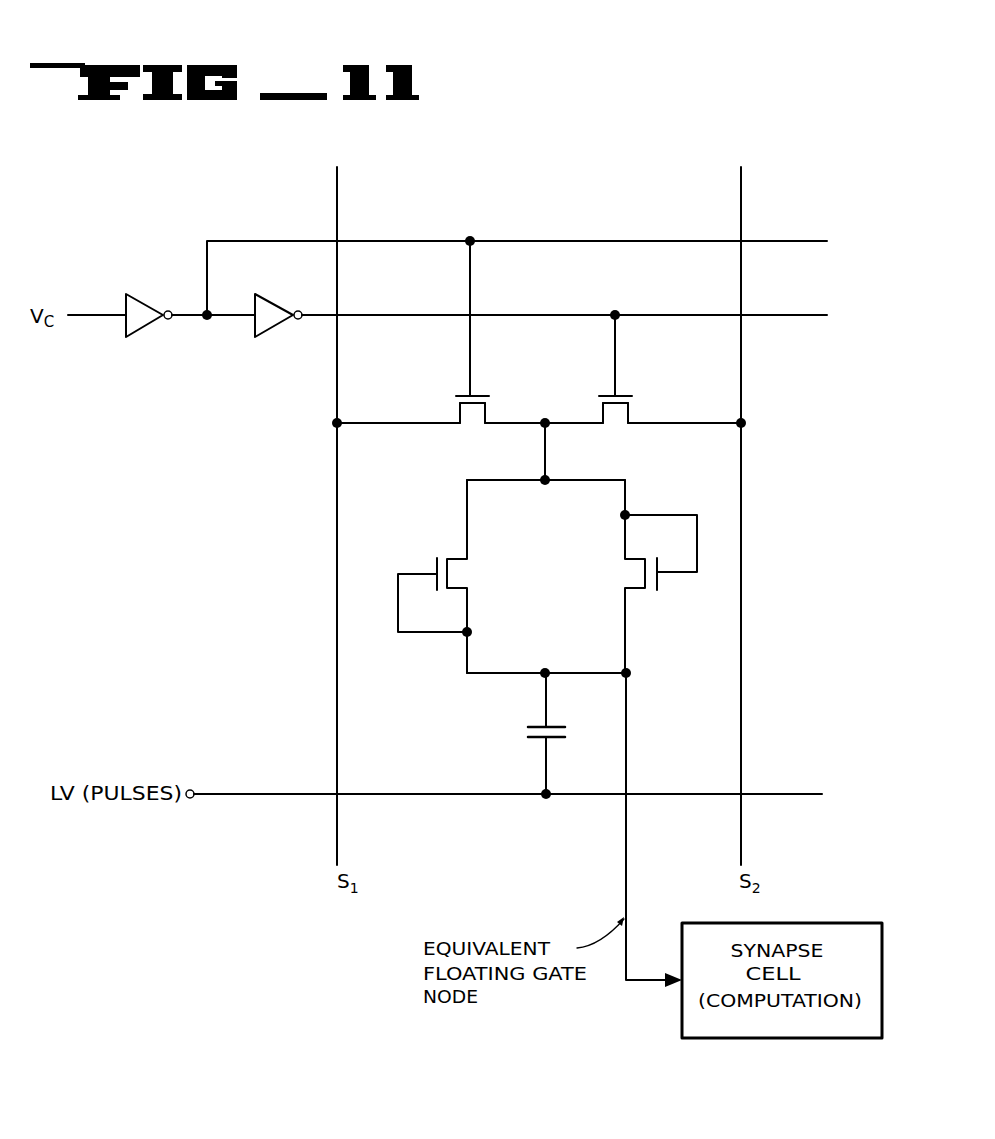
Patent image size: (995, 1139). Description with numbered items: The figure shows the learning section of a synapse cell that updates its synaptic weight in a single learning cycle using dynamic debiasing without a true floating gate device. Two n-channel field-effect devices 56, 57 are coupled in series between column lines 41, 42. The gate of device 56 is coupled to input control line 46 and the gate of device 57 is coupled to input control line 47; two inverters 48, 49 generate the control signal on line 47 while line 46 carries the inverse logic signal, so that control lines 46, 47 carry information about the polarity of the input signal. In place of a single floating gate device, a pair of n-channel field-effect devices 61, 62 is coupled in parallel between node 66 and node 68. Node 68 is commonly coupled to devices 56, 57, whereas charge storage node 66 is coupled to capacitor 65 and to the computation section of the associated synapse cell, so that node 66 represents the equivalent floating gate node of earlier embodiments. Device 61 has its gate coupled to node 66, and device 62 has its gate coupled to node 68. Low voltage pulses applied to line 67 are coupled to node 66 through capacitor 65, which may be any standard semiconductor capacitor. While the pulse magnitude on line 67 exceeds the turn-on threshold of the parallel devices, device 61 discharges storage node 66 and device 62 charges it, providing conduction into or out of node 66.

The column line 41 is at (335, 206).
The column line 42 is at (742, 201).
The input control line 46 is at (799, 242).
The input control line 47 is at (801, 315).
The inverter 48 is at (148, 326).
The inverter 49 is at (278, 326).
The n-channel field-effect device 56 is at (472, 418).
The n-channel field-effect device 57 is at (615, 418).
The field-effect device 61 is at (457, 574).
The field-effect device 62 is at (629, 572).
The capacitor 65 is at (525, 737).
The charge storage node 66 is at (631, 673).
The low voltage pulse line 67 is at (803, 793).
The node 68 is at (548, 420).